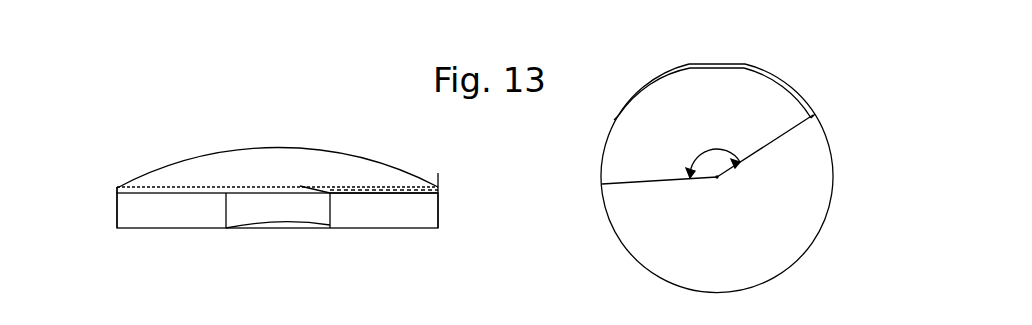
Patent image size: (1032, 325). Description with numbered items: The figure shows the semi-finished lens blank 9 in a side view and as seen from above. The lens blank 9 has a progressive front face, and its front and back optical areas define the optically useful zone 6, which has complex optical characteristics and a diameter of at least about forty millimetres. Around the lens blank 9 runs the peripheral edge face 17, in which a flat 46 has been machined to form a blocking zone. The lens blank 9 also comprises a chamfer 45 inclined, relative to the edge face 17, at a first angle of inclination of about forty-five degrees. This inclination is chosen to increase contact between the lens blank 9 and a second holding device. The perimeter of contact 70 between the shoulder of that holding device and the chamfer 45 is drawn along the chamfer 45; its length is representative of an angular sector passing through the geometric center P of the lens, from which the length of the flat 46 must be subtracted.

The semi-finished lens blank 9 is at (364, 118).
The optically useful zone 6 is at (280, 147).
The peripheral edge face 17 is at (117, 198).
The chamfer 45 is at (375, 190).
The flat 46 is at (277, 229).
The perimeter of contact 70 is at (397, 197).
The geometric center P is at (720, 180).